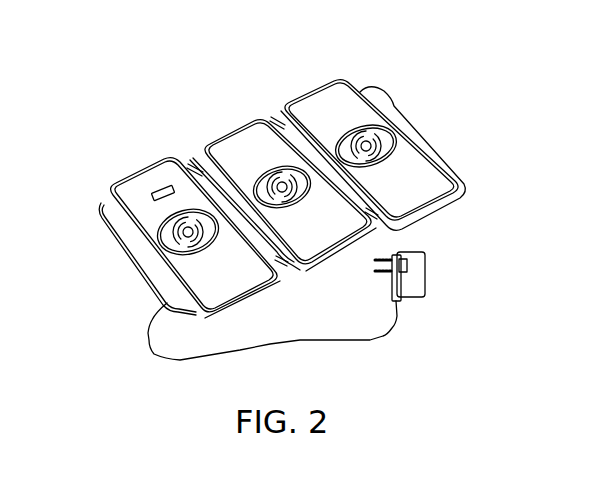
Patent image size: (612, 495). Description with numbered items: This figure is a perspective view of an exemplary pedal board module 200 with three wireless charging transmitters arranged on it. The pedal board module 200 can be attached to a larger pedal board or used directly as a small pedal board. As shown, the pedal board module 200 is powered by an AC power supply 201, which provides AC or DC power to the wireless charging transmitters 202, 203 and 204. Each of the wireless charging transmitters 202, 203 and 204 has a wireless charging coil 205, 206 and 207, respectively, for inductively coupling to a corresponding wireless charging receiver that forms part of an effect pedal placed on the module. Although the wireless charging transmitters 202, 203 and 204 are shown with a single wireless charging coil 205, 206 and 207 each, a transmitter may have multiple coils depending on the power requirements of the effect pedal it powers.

The pedal board module 200 is at (147, 270).
The AC power supply 201 is at (426, 280).
The wireless charging transmitter 202 is at (141, 168).
The wireless charging transmitter 203 is at (234, 131).
The wireless charging transmitter 204 is at (317, 89).
The wireless charging coil 205 is at (241, 246).
The wireless charging coil 206 is at (310, 186).
The wireless charging coil 207 is at (396, 144).